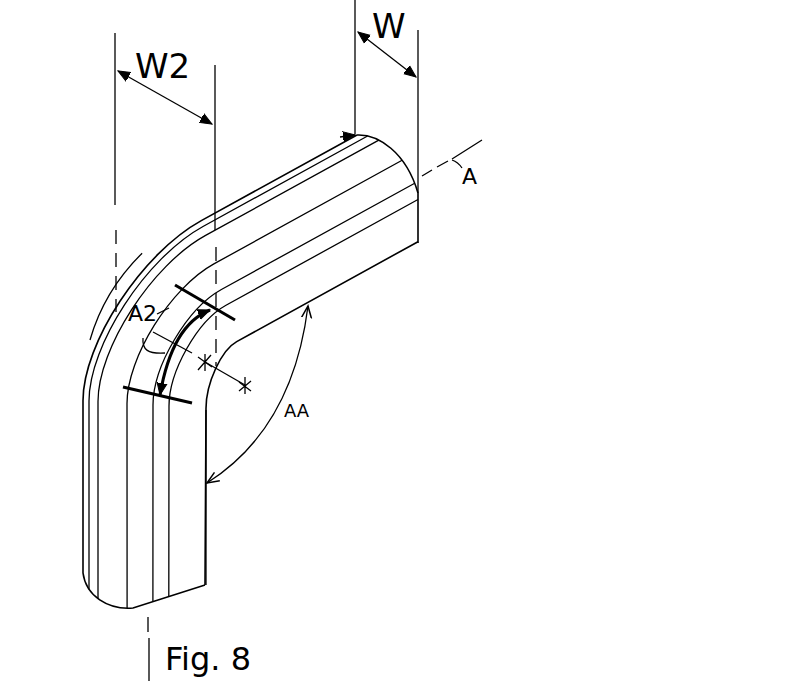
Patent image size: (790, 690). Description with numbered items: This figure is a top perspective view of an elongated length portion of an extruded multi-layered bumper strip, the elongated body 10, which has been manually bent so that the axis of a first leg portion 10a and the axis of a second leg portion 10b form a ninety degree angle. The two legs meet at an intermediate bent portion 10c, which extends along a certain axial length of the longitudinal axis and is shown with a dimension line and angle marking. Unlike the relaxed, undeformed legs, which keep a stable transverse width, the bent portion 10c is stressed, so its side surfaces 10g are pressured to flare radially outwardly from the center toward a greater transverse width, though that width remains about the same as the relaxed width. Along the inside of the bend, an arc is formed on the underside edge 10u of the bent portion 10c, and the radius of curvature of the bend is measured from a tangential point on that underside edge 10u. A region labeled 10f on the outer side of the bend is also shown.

The elongated body 10 is at (112, 200).
The first leg portion 10a is at (258, 206).
The second leg portion 10b is at (83, 528).
The bent portion 10c is at (150, 278).
The outer side surface 10f is at (87, 392).
The side surfaces 10g is at (318, 275).
The underside edge 10u is at (207, 500).